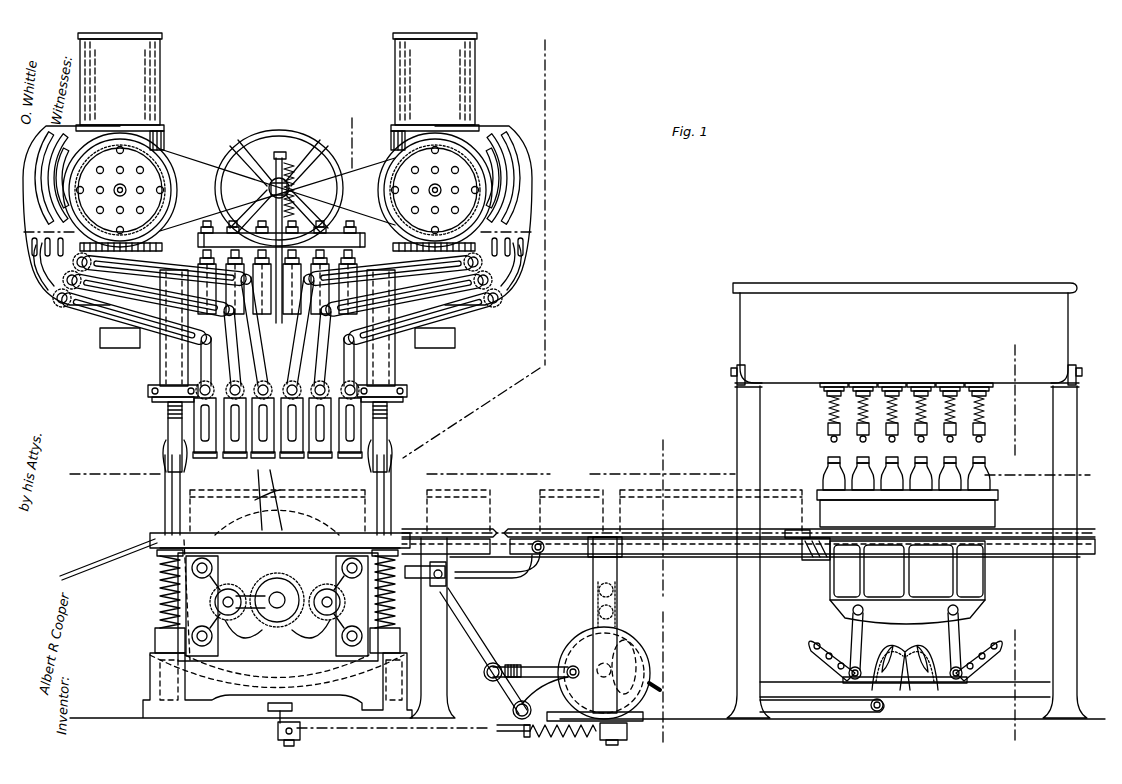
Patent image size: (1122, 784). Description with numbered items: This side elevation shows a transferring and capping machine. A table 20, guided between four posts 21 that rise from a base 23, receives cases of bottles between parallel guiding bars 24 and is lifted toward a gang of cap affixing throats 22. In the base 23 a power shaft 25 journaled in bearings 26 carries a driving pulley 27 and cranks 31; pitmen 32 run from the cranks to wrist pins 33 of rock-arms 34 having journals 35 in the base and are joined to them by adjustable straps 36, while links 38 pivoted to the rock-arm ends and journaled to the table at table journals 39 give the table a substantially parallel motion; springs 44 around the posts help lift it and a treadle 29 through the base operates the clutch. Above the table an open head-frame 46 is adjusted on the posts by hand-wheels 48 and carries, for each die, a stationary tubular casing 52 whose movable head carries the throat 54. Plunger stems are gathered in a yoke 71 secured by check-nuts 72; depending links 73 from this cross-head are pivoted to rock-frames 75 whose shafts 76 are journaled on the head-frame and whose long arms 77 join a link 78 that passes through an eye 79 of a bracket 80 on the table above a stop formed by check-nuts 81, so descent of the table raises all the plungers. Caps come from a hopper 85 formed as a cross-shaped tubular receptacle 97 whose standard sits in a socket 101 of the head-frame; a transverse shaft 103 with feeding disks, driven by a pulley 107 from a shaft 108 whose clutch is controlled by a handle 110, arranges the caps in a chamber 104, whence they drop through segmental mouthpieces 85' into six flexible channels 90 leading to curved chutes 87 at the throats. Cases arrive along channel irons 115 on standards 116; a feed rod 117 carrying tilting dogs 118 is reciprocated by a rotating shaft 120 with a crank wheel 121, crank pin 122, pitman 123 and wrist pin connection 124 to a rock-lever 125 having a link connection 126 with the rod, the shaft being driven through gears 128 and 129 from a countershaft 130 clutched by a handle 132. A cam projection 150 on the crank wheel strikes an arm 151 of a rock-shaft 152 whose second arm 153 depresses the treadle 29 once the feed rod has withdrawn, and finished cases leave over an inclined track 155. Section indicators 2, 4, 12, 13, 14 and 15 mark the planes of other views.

The hopper 85 is at (277, 82).
The cross-shaped tubular receptacle 97 is at (164, 134).
The chamber 104 is at (25, 170).
The transversely extending shaft 103 is at (130, 178).
The pulley 107 is at (170, 178).
The shaft 108 is at (270, 189).
The handle 110 is at (292, 230).
The depending link 73 is at (253, 240).
The throat 54 is at (260, 219).
The check-nuts 72 is at (333, 240).
The yoke 71 is at (360, 262).
The rock-frame 75 is at (350, 250).
The posts 21 is at (378, 470).
The long arm 77 is at (300, 312).
The channels 90 is at (96, 318).
The shafts 76 is at (446, 353).
The feed hopper outlet or mouthpiece 85' is at (275, 284).
The socket 101 is at (105, 347).
The open head-frame 46 is at (160, 366).
The hand-wheel 48 is at (148, 393).
The tubular casing 52 is at (170, 420).
The curved chute 87 is at (387, 428).
The cap affixing throats 22 is at (312, 452).
The check-nuts 81 is at (234, 461).
The eye 79 is at (268, 492).
The driving pulley 27 is at (252, 492).
The link 78 is at (308, 476).
The bracket 80 is at (330, 476).
The table journal 39 is at (240, 545).
The parallel guiding bars 24 is at (330, 530).
The table 20 is at (280, 541).
The section line 13 is at (145, 572).
The inclined track 155 is at (108, 560).
The cranks 31 is at (278, 607).
The pitmen 32 is at (277, 606).
The wrist pins 33 is at (214, 596).
The power shaft 25 is at (306, 585).
The rock-arms 34 is at (175, 606).
The bearings 26 is at (255, 618).
The adjustable straps 36 is at (264, 639).
The journals 35 is at (193, 609).
The links 38 is at (160, 585).
The springs 44 is at (158, 620).
The base 23 is at (150, 670).
The treadle 29 is at (268, 707).
The second arm 153 is at (278, 729).
The section line 12 is at (100, 474).
The section line 2 is at (538, 40).
The section line 4 is at (299, 288).
The supporting standards 116 is at (748, 550).
The channel irons 115 is at (686, 521).
The feed rod 117 is at (720, 558).
The dogs 118 is at (624, 549).
The gear 128 is at (590, 618).
The crank wheel 121 is at (650, 642).
The constantly rotating shaft 120 is at (620, 640).
The countershaft 130 is at (614, 598).
The gear 129 is at (615, 614).
The cam projection 150 is at (661, 689).
The arm 151 is at (591, 734).
The section line 15 is at (658, 428).
The handle 132 is at (446, 588).
The link connection 126 is at (490, 580).
The rock-lever 125 is at (488, 636).
The connecting rod or pitman 123 is at (500, 664).
The crank pin 122 is at (545, 662).
The wrist pin connection 124 is at (512, 708).
The rock-shaft 152 is at (500, 718).
The tank 14 is at (1010, 342).